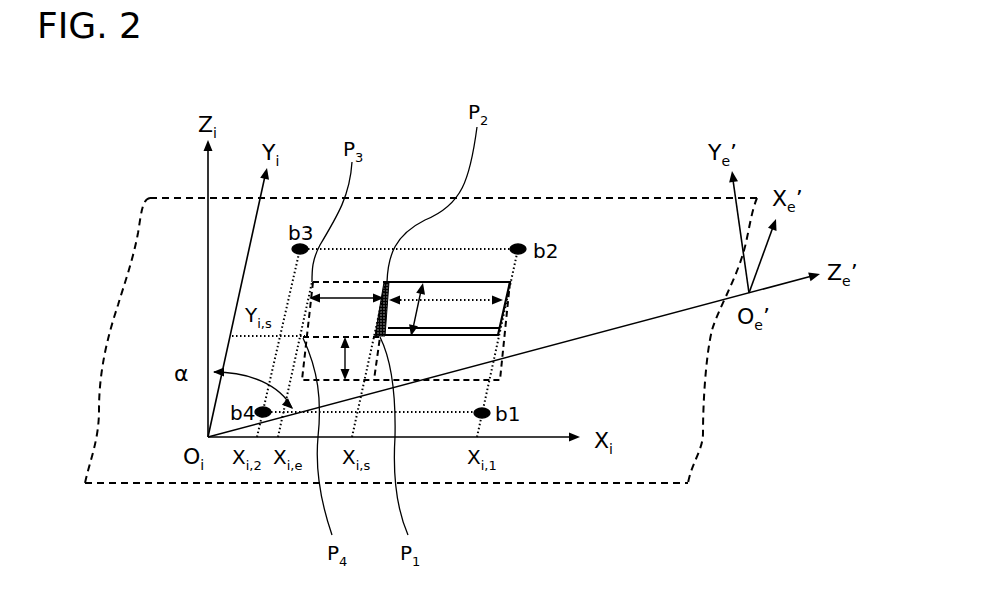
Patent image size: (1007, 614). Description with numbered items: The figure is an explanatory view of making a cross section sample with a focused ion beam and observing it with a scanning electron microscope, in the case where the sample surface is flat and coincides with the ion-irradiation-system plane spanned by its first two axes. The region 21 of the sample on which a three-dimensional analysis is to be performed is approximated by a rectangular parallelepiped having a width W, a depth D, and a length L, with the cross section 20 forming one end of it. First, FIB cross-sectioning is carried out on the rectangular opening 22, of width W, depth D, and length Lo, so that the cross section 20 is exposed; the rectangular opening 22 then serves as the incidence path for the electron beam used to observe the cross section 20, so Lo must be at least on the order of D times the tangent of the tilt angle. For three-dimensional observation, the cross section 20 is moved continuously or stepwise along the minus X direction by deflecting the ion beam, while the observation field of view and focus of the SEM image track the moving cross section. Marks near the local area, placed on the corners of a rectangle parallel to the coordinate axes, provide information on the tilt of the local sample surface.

The cross section 20 is at (378, 290).
The region 21 is at (347, 282).
The rectangular opening 22 is at (468, 333).